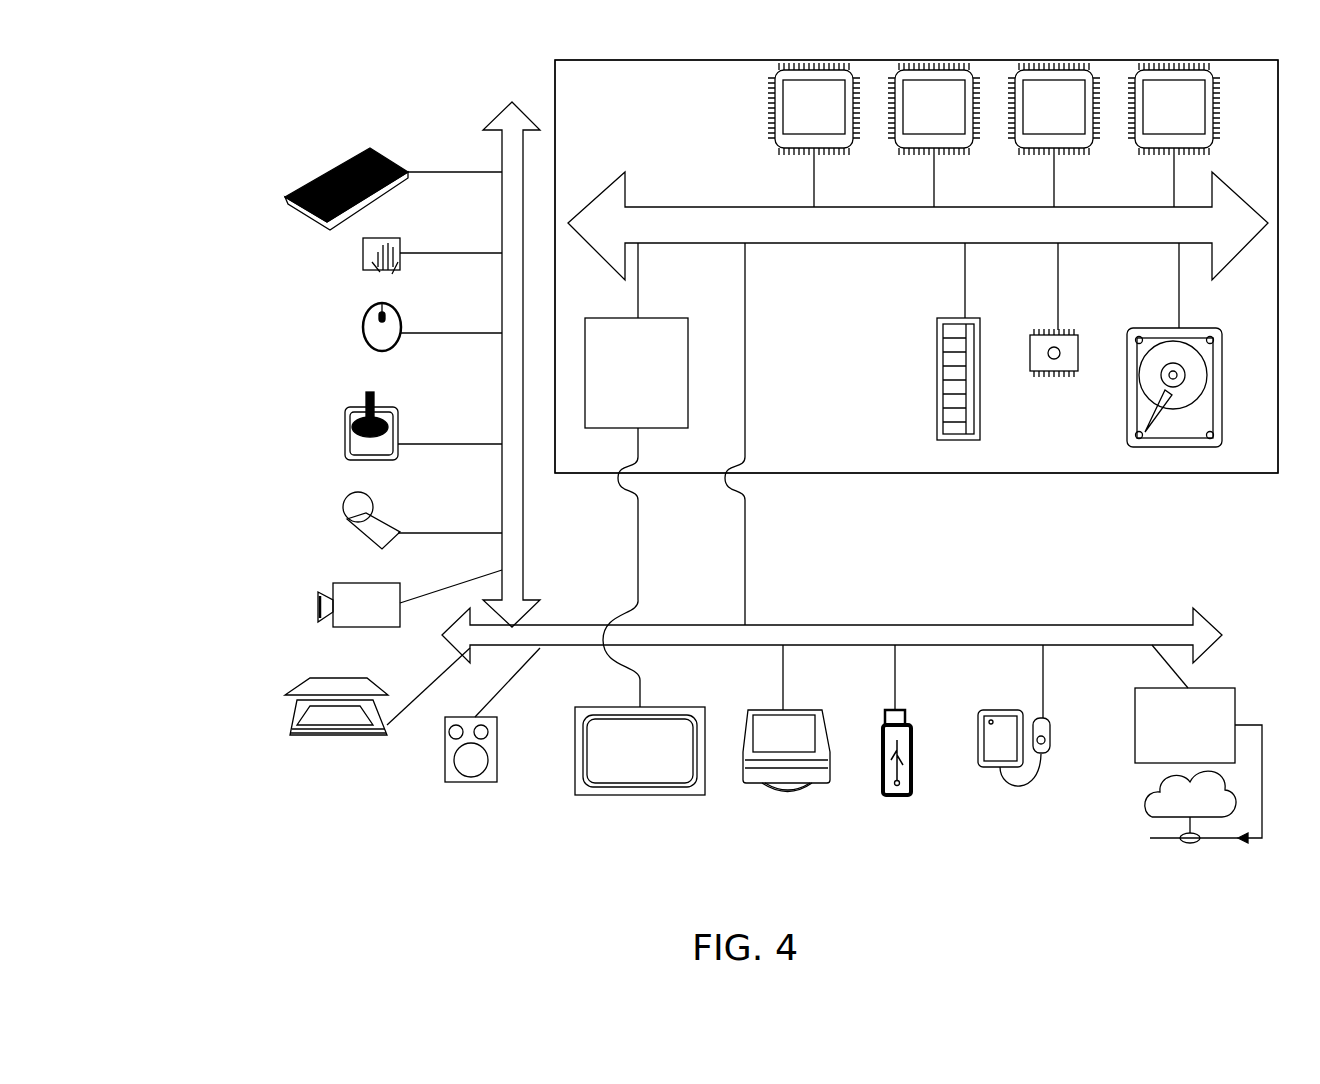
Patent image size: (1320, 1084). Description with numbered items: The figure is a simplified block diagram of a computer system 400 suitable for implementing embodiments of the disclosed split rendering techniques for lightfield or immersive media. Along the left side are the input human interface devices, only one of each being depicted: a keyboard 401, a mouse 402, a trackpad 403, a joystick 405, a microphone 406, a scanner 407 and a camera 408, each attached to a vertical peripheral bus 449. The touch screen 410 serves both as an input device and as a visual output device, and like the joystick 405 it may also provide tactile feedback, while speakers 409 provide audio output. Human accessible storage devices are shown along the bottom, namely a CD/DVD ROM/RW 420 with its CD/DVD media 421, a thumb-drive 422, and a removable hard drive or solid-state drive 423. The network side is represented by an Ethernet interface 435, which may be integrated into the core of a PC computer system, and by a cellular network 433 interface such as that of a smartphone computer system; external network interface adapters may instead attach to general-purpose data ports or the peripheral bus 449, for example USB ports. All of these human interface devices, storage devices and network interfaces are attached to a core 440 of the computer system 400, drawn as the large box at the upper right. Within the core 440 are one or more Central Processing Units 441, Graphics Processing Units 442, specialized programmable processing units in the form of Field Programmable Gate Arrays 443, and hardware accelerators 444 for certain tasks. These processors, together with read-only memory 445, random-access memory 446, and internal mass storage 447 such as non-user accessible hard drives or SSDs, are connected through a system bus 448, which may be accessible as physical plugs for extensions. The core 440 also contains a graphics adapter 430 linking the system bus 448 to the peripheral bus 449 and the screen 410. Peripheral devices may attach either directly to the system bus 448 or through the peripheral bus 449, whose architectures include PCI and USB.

The computer system 400 is at (228, 110).
The keyboard 401 is at (285, 205).
The mouse 402 is at (363, 333).
The trackpad 403 is at (363, 257).
The joystick 405 is at (345, 445).
The microphone 406 is at (345, 512).
The scanner 407 is at (290, 730).
The camera 408 is at (318, 608).
The speakers 409 is at (468, 785).
The touch screen 410 is at (635, 797).
The CD/DVD ROM/RW 420 is at (815, 783).
The CD/DVD media 421 is at (766, 785).
The thumb-drive 422 is at (895, 797).
The removable hard drive or solid-state drive 423 is at (985, 770).
The graphics adapter 430 is at (636, 475).
The cellular network interface 433 is at (1150, 814).
The Ethernet interface 435 is at (1198, 744).
The core 440 is at (910, 474).
The Central Processing Unit (CPU) 441 is at (814, 135).
The Graphics Processing Unit (GPU) 442 is at (934, 135).
The Field Programmable Gate Array (FPGA) 443 is at (1054, 135).
The hardware accelerator 444 is at (1174, 135).
The Read-only memory (ROM) 445 is at (1055, 378).
The random-access memory 446 is at (934, 372).
The internal mass storage 447 is at (1140, 330).
The system bus 448 is at (918, 226).
The peripheral bus 449 is at (483, 130).